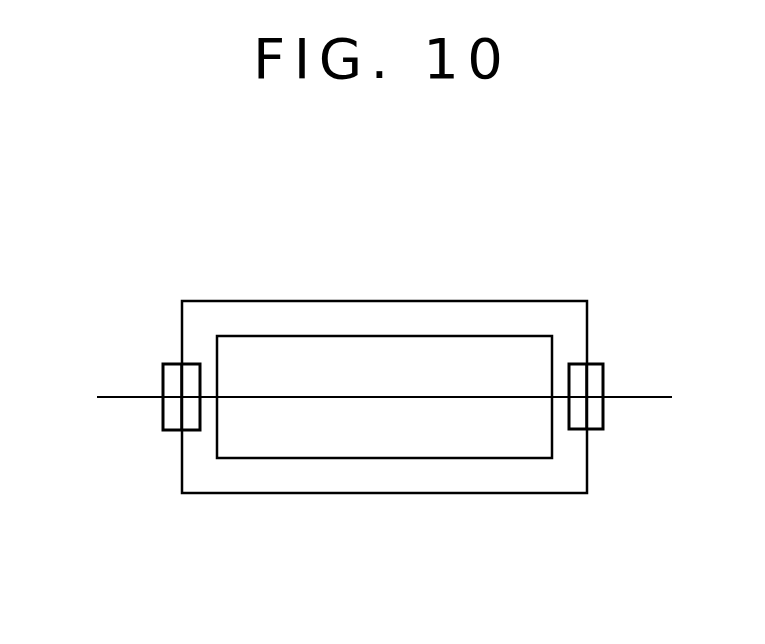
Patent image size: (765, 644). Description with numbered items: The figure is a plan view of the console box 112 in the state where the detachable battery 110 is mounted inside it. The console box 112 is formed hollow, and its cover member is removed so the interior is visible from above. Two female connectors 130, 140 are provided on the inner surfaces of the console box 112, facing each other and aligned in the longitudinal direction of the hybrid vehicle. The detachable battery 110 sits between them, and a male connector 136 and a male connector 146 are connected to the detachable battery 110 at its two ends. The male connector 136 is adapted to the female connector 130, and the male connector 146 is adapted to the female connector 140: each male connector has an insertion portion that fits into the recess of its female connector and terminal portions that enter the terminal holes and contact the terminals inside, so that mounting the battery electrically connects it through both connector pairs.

The detachable battery 110 is at (383, 336).
The console box 112 is at (391, 494).
The female connector 130 is at (603, 378).
The male connector 136 is at (578, 422).
The female connector 140 is at (163, 379).
The male connector 146 is at (190, 423).